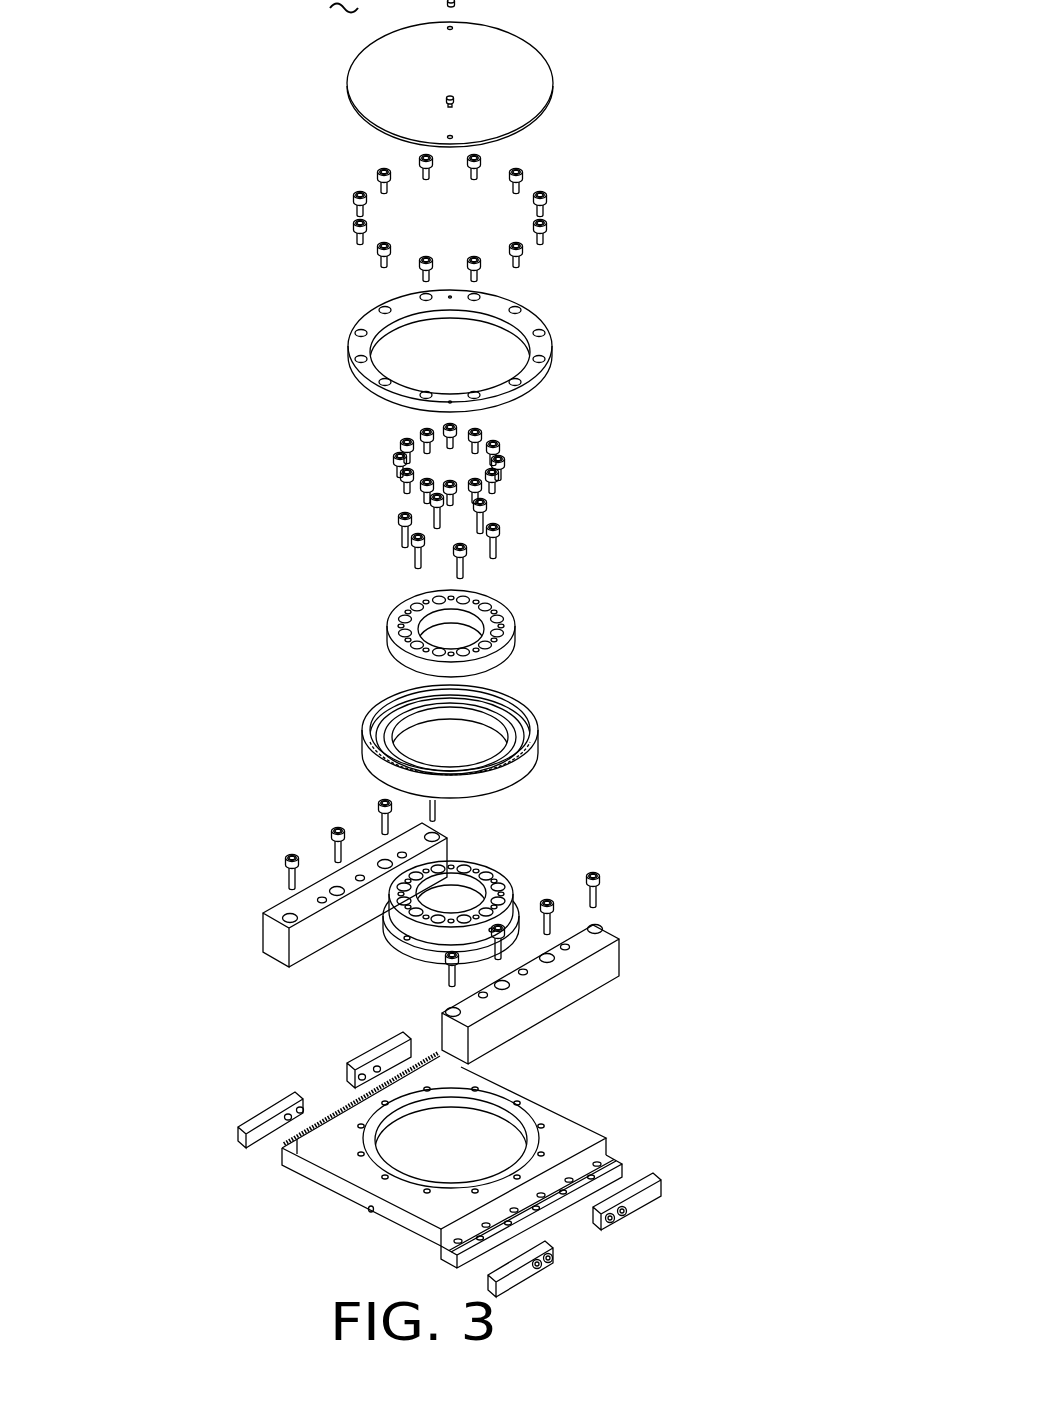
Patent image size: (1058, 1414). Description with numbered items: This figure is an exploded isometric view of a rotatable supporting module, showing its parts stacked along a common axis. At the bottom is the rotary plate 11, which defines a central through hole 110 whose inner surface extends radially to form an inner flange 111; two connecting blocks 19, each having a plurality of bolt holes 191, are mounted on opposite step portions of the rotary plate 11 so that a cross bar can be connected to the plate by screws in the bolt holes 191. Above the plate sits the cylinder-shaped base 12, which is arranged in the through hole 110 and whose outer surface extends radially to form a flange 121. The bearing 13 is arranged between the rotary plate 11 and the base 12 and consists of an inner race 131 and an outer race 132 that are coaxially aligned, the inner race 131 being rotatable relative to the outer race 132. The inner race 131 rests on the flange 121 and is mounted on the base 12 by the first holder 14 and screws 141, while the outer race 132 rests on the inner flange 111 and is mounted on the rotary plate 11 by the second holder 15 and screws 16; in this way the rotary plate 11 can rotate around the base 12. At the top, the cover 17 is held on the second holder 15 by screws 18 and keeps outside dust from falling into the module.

The rotary plate 11 is at (465, 1164).
The through hole 110 is at (473, 1147).
The inner flange 111 is at (523, 1130).
The base 12 is at (484, 914).
The flange 121 is at (408, 938).
The bearing 13 is at (449, 731).
The inner race 131 is at (503, 713).
The outer race 132 is at (527, 736).
The first holder 14 is at (508, 632).
The screws 141 is at (498, 444).
The second holder 15 is at (545, 350).
The screws 16 is at (547, 208).
The cover 17 is at (513, 90).
The screws 18 is at (453, 0).
The connecting blocks 19 is at (473, 932).
The bolt holes 191 is at (570, 937).